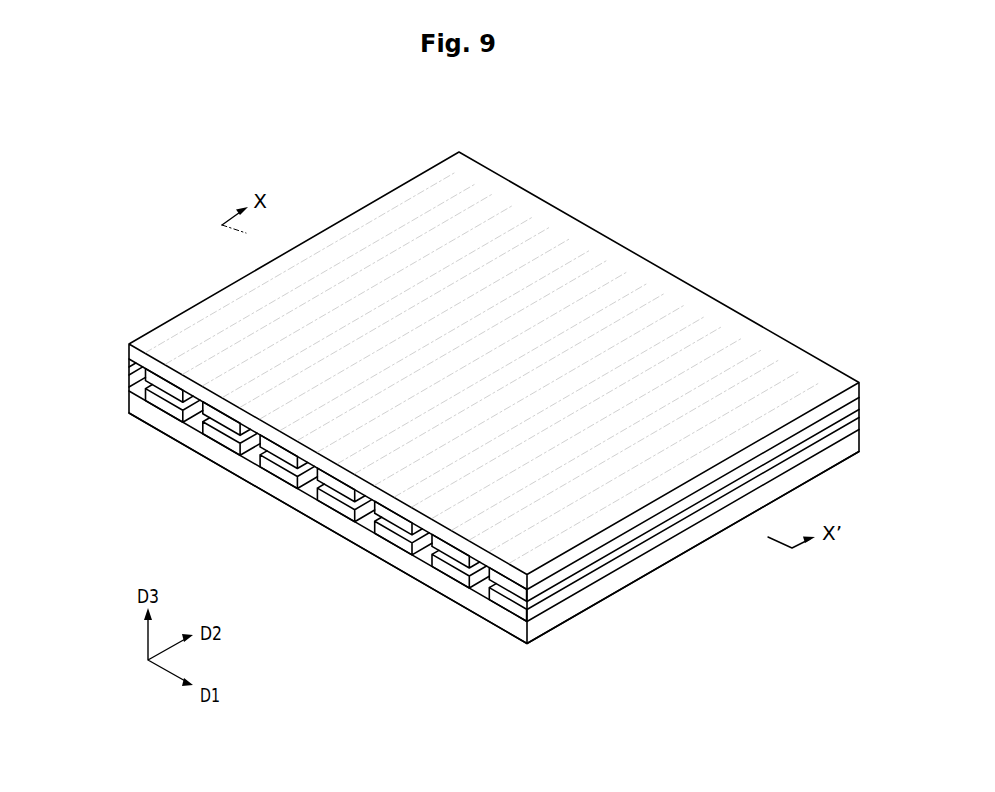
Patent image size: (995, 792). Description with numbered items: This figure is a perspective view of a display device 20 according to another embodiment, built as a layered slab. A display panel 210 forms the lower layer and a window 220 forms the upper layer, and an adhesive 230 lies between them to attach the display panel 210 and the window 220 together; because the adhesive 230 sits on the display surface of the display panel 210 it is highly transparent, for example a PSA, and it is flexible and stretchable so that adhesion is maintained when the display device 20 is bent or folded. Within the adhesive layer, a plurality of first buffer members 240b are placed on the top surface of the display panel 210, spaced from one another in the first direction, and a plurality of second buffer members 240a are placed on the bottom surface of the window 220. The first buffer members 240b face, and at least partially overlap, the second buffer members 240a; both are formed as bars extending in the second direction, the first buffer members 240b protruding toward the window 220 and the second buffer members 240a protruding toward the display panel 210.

The display device 20 is at (613, 138).
The display panel 210 is at (210, 452).
The window 220 is at (133, 352).
The adhesive 230 is at (135, 387).
The second buffer members 240a is at (173, 391).
The first buffer members 240b is at (158, 408).